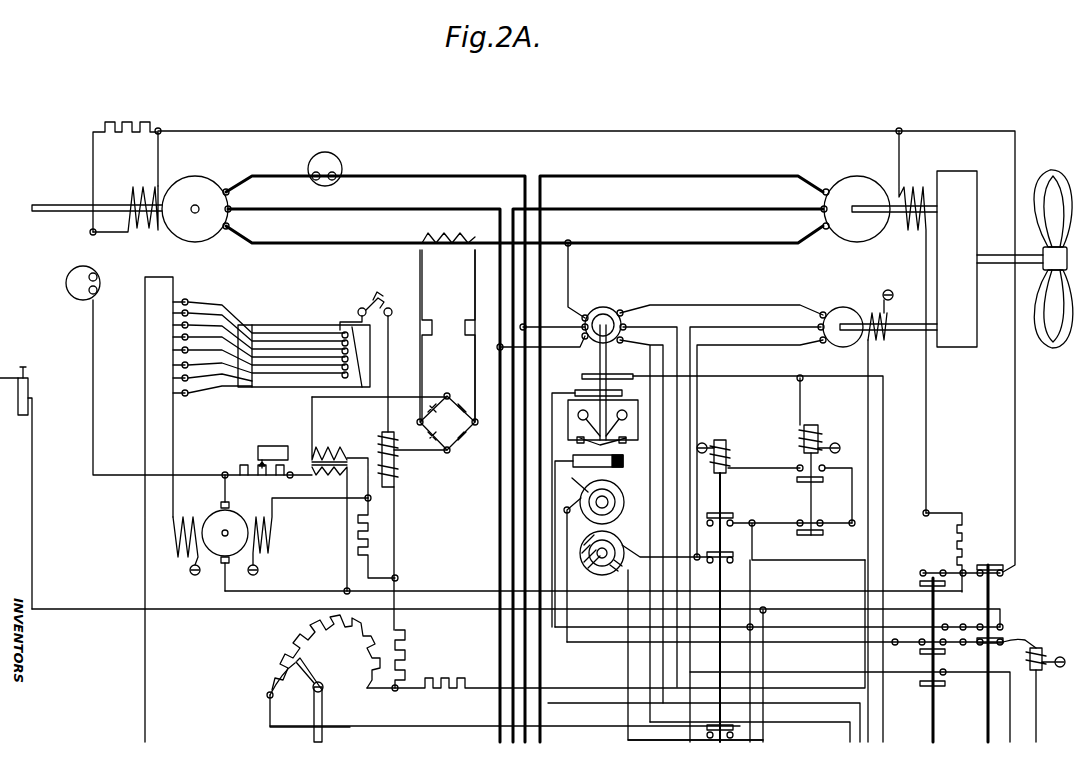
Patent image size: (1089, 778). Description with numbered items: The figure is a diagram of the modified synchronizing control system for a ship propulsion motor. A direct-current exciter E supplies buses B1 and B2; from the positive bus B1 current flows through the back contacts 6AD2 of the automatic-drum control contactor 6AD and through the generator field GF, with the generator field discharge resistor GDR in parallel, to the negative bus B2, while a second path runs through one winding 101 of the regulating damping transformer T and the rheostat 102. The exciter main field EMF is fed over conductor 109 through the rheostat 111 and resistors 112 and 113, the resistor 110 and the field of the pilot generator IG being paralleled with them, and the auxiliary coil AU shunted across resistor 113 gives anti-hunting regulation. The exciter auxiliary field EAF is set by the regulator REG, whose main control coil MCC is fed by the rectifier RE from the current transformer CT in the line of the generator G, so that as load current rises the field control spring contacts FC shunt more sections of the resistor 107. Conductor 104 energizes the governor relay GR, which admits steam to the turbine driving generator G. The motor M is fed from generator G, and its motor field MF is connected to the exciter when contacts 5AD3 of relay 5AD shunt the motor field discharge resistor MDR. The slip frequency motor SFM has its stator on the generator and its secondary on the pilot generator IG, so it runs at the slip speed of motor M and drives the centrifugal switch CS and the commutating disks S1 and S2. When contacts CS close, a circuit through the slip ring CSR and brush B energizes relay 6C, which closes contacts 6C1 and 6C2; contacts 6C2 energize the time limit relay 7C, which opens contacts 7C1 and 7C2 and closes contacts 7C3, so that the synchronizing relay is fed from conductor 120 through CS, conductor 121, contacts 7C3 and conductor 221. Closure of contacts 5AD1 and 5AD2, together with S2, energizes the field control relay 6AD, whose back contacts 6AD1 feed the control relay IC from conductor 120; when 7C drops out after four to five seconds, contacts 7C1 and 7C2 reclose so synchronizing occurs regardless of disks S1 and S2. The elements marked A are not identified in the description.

The generator field discharge resistor GDR is at (133, 150).
The generator field GF is at (130, 187).
The generator G is at (212, 182).
The ammeter A is at (338, 182).
The motor M is at (870, 182).
The motor field MF is at (905, 180).
The current transformer CT is at (455, 232).
The regulator REG is at (385, 290).
The field control spring contacts FC is at (296, 325).
The resistor sections 107 is at (175, 360).
The slip frequency motor SFM is at (620, 296).
The pilot generator IG is at (845, 310).
The slip ring CSR is at (580, 378).
The brush B is at (627, 386).
The governor relay GR is at (30, 392).
The rheostat 102 is at (241, 468).
The regulating damping transformer T is at (330, 443).
The winding of regulating damping transformer 101 is at (333, 478).
The main control coil MCC is at (385, 430).
The auxiliary coil AU is at (396, 474).
The rectifier RE is at (460, 428).
The centrifugal switch contacts CS is at (623, 460).
The commutating disks S1 is at (622, 495).
The commutating disks S2 is at (622, 539).
The time limit relay 7C is at (722, 446).
The contacts of time limit relay 7C1 is at (732, 525).
The contacts of time limit relay 7C2 is at (732, 562).
The contacts of time limit relay 7C3 is at (715, 738).
The relay 6C is at (840, 512).
The contacts of relay 6C 6C1 is at (800, 520).
The contacts of relay 6C 6C2 is at (798, 470).
The motor field discharge resistor MDR is at (963, 540).
The relay 5AD is at (970, 744).
The contacts of relay 5AD 5AD1 is at (942, 678).
The contacts of relay 5AD 5AD2 is at (942, 636).
The contacts of relay 5AD 5AD3 is at (924, 570).
The automatic-drum control contactor 6AD is at (984, 708).
The back contacts of contactor 6AD 6AD1 is at (1003, 629).
The back contacts of contactor 6AD 6AD2 is at (996, 575).
The control relay IC is at (1058, 723).
The bus B2 is at (122, 478).
The bus B1 is at (280, 591).
The direct-current exciter E is at (214, 512).
The exciter main field EMF is at (276, 541).
The exciter auxiliary field EAF is at (188, 570).
The resistor 113 is at (368, 543).
The conductor 104 is at (200, 612).
The resistor 112 is at (405, 645).
The resistor 110 is at (445, 680).
The rheostat 111 is at (345, 675).
The conductor 109 is at (352, 726).
The conductor 121 is at (552, 706).
The conductor 120 is at (576, 627).
The conductor 221 is at (785, 718).